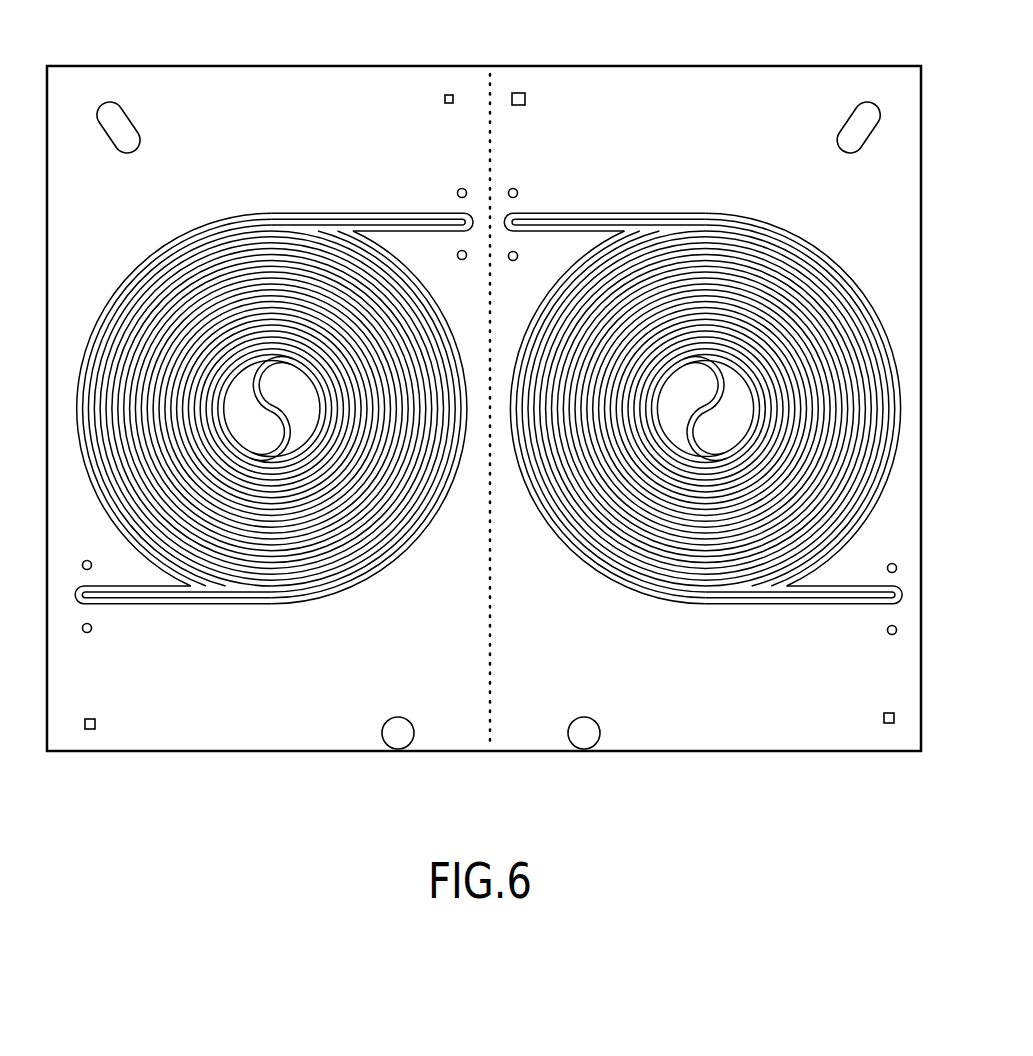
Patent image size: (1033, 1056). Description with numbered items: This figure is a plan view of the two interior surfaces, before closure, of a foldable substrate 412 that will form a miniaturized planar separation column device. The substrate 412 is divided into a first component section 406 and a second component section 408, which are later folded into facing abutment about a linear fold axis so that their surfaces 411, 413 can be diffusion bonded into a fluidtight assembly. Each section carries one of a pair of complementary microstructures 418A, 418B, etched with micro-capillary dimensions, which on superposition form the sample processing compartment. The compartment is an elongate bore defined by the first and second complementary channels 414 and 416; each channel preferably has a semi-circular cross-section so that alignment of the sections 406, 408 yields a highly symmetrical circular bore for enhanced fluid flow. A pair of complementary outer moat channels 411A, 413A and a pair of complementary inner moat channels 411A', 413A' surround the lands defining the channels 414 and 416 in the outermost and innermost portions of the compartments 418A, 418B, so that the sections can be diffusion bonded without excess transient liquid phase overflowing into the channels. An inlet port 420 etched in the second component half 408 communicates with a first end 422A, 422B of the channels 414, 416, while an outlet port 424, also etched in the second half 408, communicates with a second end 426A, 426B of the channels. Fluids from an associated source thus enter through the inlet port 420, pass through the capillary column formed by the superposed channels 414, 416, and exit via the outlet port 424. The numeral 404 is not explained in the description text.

The substrate 404 is at (707, 65).
The first component section 406 is at (310, 742).
The second component section 408 is at (662, 745).
The surface 411 is at (288, 697).
The outer moat channel 411A is at (280, 407).
The inner moat channel 411A' is at (272, 409).
The foldable substrate 412 is at (386, 55).
The surface 413 is at (718, 697).
The outer moat channel 413A is at (707, 429).
The inner moat channel 413A' is at (702, 409).
The first channel 414 is at (392, 222).
The second channel 416 is at (571, 222).
The complementary microstructure 418A is at (306, 195).
The complementary microstructure 418B is at (755, 196).
The inlet port 420 is at (515, 221).
The first end of first channel 422A is at (254, 193).
The first end of second channel 422B is at (677, 196).
The outlet port 424 is at (890, 601).
The second end of first channel 426A is at (143, 598).
The second end of second channel 426B is at (786, 598).